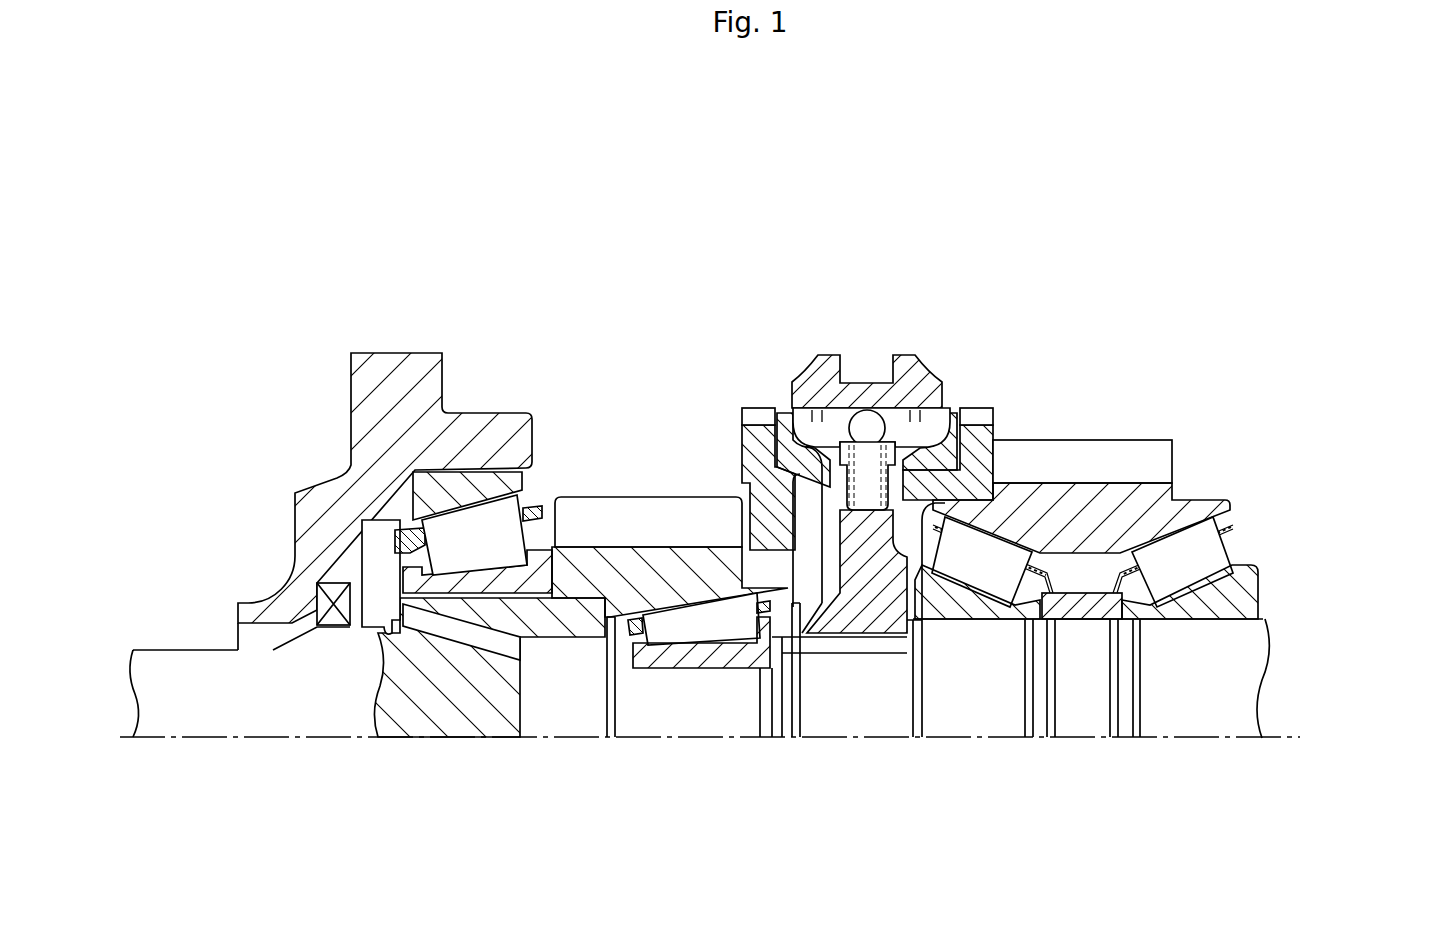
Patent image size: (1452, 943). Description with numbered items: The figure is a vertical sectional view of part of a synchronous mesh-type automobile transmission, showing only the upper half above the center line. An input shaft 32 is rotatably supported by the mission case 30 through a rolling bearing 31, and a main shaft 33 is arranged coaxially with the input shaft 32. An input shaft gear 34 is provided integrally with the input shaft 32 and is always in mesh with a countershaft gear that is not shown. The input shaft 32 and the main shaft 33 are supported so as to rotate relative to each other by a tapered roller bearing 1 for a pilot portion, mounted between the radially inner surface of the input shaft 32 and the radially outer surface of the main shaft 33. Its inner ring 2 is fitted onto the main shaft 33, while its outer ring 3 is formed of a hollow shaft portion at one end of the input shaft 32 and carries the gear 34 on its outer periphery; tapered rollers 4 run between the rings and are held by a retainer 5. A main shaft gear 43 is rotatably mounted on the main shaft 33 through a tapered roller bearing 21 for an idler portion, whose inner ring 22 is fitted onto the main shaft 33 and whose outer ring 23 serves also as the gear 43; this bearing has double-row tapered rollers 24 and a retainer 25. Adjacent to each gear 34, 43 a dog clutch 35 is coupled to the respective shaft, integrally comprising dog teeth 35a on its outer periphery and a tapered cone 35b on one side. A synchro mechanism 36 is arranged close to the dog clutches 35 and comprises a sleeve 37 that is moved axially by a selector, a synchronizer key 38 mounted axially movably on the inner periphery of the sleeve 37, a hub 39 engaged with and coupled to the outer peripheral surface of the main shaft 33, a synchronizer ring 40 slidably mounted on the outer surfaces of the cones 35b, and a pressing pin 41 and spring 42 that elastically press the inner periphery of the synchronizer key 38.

The tapered roller bearing for a pilot portion 1 is at (660, 629).
The inner ring 2 is at (731, 667).
The outer ring 3 is at (694, 580).
The tapered rollers 4 is at (685, 715).
The retainer 5 is at (618, 632).
The tapered roller bearing for an idler portion 21 is at (1170, 586).
The inner ring 22 is at (1220, 618).
The outer ring 23 is at (1170, 510).
The double-row tapered rollers 24 is at (1213, 556).
The retainer 25 is at (1242, 520).
The mission case 30 is at (358, 392).
The rolling bearing 31 is at (472, 530).
The input shaft 32 is at (242, 718).
The main shaft 33 is at (982, 727).
The input shaft gear 34 is at (613, 515).
The dog clutch 35 is at (890, 433).
The dog teeth 35a is at (758, 413).
The cone 35b is at (816, 470).
The synchro mechanism 36 is at (923, 345).
The sleeve 37 is at (813, 440).
The synchronizer key 38 is at (930, 415).
The hub 39 is at (865, 590).
The synchronizer ring 40 is at (793, 445).
The pressing pin 41 is at (866, 410).
The spring 42 is at (900, 445).
The main shaft gear 43 is at (1140, 455).